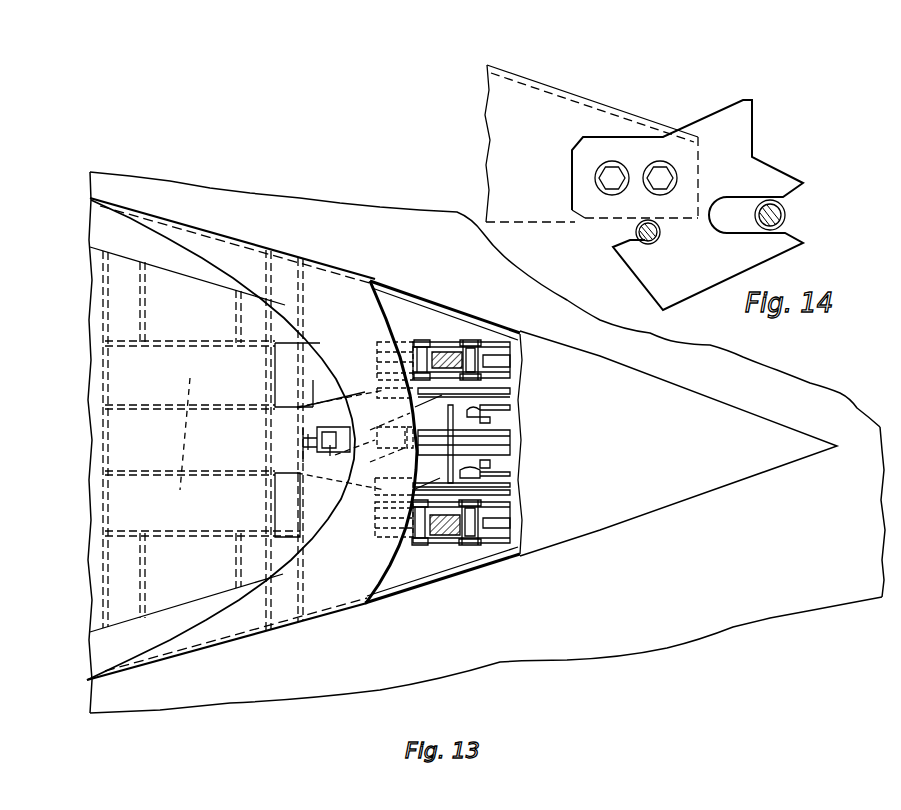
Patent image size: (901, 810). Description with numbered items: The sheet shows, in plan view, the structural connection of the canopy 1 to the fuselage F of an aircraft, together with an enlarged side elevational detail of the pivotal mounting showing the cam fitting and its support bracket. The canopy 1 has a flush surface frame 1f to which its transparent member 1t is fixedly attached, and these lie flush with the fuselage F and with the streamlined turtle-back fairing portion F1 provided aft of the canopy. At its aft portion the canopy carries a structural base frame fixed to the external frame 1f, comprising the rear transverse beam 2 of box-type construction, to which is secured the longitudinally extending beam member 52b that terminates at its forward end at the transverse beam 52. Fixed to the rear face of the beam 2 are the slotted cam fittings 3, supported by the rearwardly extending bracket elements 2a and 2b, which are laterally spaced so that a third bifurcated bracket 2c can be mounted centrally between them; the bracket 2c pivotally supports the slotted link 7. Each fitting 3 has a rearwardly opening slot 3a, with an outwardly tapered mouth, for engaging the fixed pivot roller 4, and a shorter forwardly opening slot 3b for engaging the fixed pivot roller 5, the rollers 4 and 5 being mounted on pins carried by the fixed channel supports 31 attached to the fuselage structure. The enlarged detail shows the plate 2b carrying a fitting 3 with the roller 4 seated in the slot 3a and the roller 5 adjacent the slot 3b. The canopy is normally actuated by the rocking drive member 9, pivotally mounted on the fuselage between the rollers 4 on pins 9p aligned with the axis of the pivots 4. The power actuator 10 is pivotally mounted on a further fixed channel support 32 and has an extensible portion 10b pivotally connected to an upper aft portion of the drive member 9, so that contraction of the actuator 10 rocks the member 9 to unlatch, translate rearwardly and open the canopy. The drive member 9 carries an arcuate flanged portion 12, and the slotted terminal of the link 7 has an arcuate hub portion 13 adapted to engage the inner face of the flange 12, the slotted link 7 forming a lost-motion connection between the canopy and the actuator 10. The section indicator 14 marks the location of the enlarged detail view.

In FIG. 13, the canopy 1 is at (80, 346).
In FIG. 13, the transparent member 1t is at (87, 380).
In FIG. 13, the flush surface frame 1f is at (345, 305).
In FIG. 13, the rear transverse beam 2 is at (268, 311).
In FIG. 13, the bracket element 2a is at (313, 537).
In FIG. 13, the bracket element 2b is at (312, 343).
In FIG. 14, the bracket element 2b is at (556, 102).
In FIG. 13, the bifurcated bracket 2c is at (297, 408).
In FIG. 13, the slotted cam fitting 3 is at (452, 350).
In FIG. 14, the slotted cam fitting 3 is at (722, 124).
In FIG. 14, the rearwardly opening slot 3a is at (735, 226).
In FIG. 14, the forwardly opening slot 3b is at (625, 240).
In FIG. 13, the pivot roller 4 is at (470, 340).
In FIG. 14, the pivot roller 4 is at (786, 214).
In FIG. 13, the pivot roller 5 is at (422, 340).
In FIG. 14, the pivot roller 5 is at (657, 237).
In FIG. 13, the slotted link 7 is at (306, 452).
In FIG. 13, the rocking drive member 9 is at (440, 429).
In FIG. 13, the pivot pin 9p is at (500, 407).
In FIG. 13, the power actuator 10 is at (520, 459).
In FIG. 13, the extensible portion 10b is at (505, 440).
In FIG. 13, the arcuate flanged portion 12 is at (326, 430).
In FIG. 13, the arcuate hub portion 13 is at (332, 452).
In FIG. 13, the section line 14 is at (348, 348).
In FIG. 13, the channel support fitting 31 is at (505, 362).
In FIG. 13, the channel support 32 is at (505, 394).
In FIG. 13, the transverse beam 52 is at (110, 290).
In FIG. 13, the longitudinally extending beam member 52b is at (180, 434).
In FIG. 13, the fuselage F is at (396, 208).
In FIG. 13, the fairing portion F1 is at (740, 483).